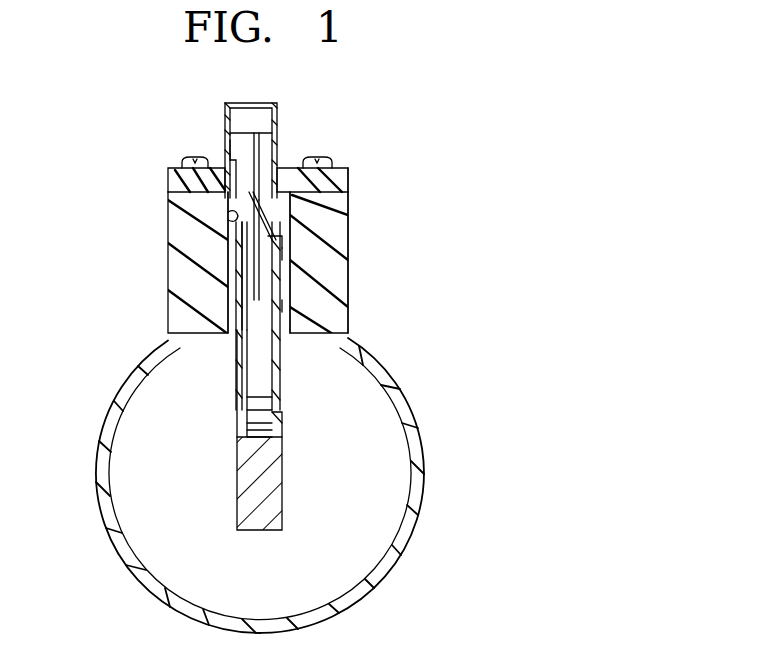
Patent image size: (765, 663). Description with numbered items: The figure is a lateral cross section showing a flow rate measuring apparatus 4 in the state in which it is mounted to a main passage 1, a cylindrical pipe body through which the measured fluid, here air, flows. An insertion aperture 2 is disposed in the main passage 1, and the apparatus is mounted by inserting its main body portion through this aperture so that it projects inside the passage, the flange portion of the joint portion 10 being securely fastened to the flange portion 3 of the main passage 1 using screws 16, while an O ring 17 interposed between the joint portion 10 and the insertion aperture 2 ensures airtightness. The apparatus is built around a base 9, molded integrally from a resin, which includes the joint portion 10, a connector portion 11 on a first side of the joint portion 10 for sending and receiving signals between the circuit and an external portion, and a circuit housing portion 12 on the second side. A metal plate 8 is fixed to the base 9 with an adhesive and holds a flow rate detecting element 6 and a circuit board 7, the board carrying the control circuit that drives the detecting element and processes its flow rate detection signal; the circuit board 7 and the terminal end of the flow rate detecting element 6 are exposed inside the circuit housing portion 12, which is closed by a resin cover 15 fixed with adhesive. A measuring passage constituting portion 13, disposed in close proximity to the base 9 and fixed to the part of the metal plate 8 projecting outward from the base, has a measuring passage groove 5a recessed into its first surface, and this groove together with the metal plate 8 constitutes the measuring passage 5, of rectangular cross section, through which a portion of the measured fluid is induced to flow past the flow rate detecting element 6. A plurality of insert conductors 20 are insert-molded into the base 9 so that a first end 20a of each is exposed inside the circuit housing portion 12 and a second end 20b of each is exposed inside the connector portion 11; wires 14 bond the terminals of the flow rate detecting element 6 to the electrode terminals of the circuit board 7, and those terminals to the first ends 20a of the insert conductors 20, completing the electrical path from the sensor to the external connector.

The main passage 1 is at (112, 388).
The insertion aperture 2 is at (232, 272).
The flange portion 3 is at (215, 238).
The flow rate measuring apparatus 4 is at (296, 124).
The measuring passage 5 is at (255, 440).
The measuring passage groove 5a is at (283, 443).
The flow rate detecting element 6 is at (283, 423).
The circuit board 7 is at (290, 312).
The metal plate 8 is at (240, 478).
The base 9 is at (349, 167).
The joint portion 10 is at (348, 180).
The connector portion 11 is at (228, 124).
The circuit housing portion 12 is at (188, 346).
The measuring passage constituting portion 13 is at (283, 472).
The wires 14 is at (268, 268).
The resin cover 15 is at (300, 330).
The screws 16 is at (186, 160).
The O ring 17 is at (233, 215).
The insert conductors 20 is at (280, 214).
The first end 20a is at (264, 241).
The second end 20b is at (262, 144).